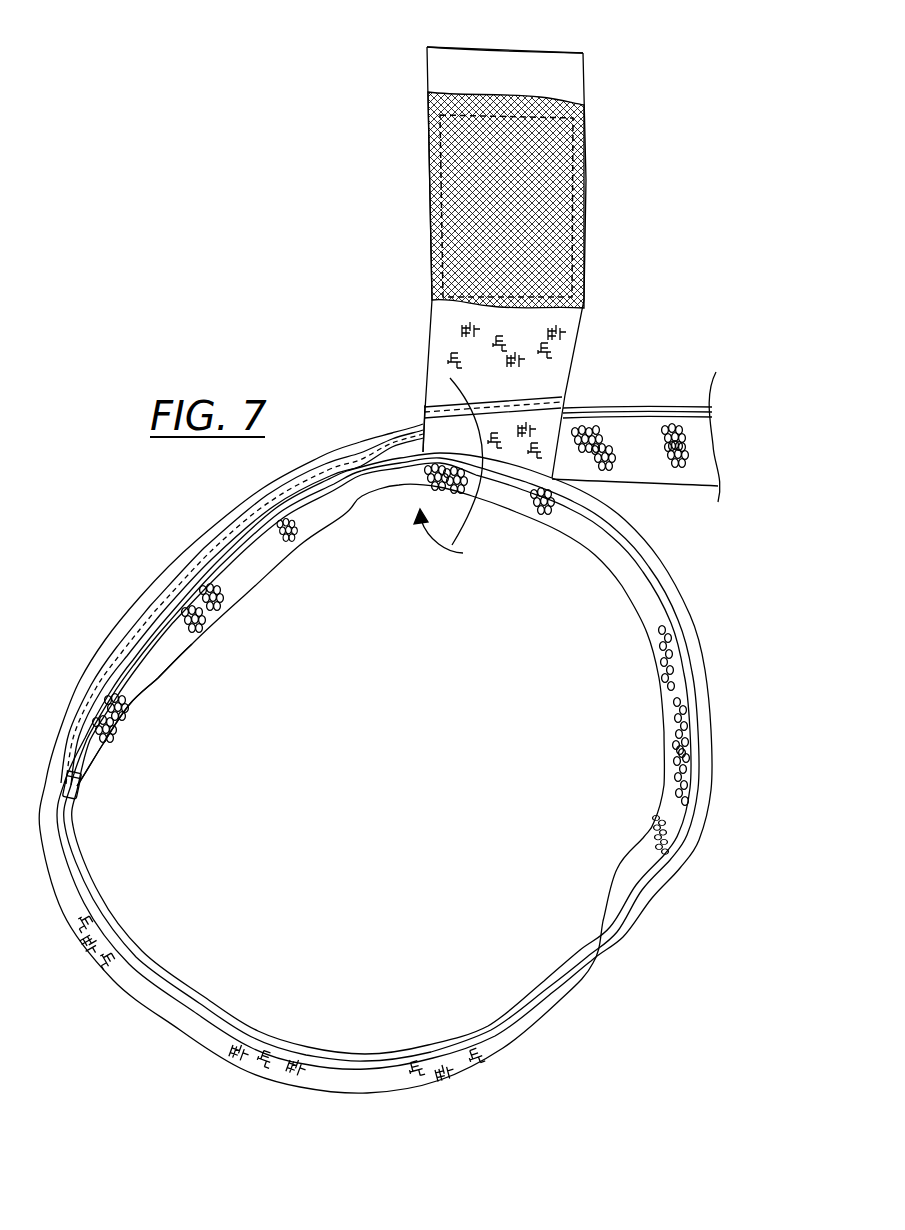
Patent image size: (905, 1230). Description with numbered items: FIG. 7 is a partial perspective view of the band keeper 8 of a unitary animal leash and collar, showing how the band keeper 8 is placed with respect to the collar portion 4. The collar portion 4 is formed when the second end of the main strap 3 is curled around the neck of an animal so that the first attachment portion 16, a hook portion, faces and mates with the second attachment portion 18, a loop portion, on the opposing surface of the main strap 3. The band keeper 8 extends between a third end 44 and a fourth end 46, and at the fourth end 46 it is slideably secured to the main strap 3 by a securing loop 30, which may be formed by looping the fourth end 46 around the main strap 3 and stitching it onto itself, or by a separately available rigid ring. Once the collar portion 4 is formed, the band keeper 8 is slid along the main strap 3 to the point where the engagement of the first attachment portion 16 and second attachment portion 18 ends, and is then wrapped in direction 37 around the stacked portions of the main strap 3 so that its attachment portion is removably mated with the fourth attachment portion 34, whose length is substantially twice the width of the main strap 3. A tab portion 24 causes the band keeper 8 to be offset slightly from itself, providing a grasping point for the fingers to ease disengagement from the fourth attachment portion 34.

The main strap 3 is at (646, 407).
The collar portion 4 is at (279, 620).
The band keeper 8 is at (408, 209).
The first attachment portion 16 is at (278, 503).
The second attachment portion 18 is at (157, 664).
The tab portion 24 is at (584, 90).
The securing loop 30 is at (423, 426).
The fourth attachment portion 34 is at (585, 232).
The direction 37 is at (458, 540).
The third end 44 is at (407, 101).
The fourth end 46 is at (413, 401).